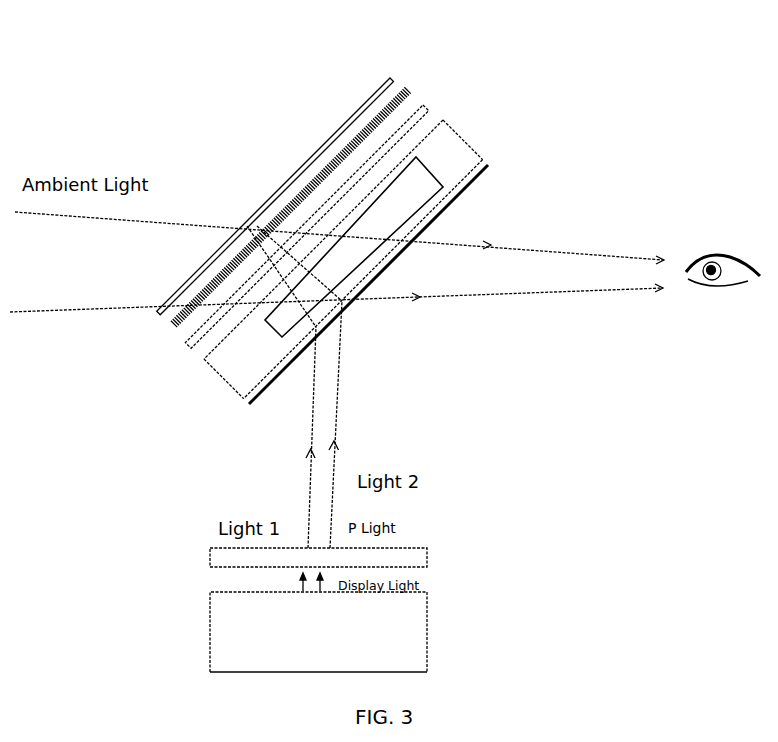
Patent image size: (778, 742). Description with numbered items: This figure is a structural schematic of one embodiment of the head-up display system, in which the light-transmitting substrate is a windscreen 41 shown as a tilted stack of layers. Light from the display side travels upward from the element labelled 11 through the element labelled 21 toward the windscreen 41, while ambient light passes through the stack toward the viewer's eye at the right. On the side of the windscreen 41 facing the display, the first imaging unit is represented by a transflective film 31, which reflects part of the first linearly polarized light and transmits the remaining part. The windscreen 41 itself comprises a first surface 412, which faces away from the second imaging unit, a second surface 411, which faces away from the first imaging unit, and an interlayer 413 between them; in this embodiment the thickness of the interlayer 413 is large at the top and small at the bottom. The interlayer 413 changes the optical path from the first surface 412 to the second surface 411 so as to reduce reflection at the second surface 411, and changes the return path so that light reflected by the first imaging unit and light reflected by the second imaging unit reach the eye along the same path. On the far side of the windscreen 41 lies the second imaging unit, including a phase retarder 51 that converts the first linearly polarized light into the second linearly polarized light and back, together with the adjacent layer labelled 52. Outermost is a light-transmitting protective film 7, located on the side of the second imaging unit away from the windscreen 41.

The light-transmitting protective film 7 is at (395, 80).
The anti-reflection layer 52 is at (412, 90).
The phase retarder 51 is at (430, 108).
The transflective film 31 is at (487, 170).
The windscreen 41 is at (290, 294).
The second surface 411 is at (217, 345).
The first surface 412 is at (331, 314).
The interlayer 413 is at (213, 372).
The polarizer 21 is at (222, 553).
The display panel 11 is at (222, 630).